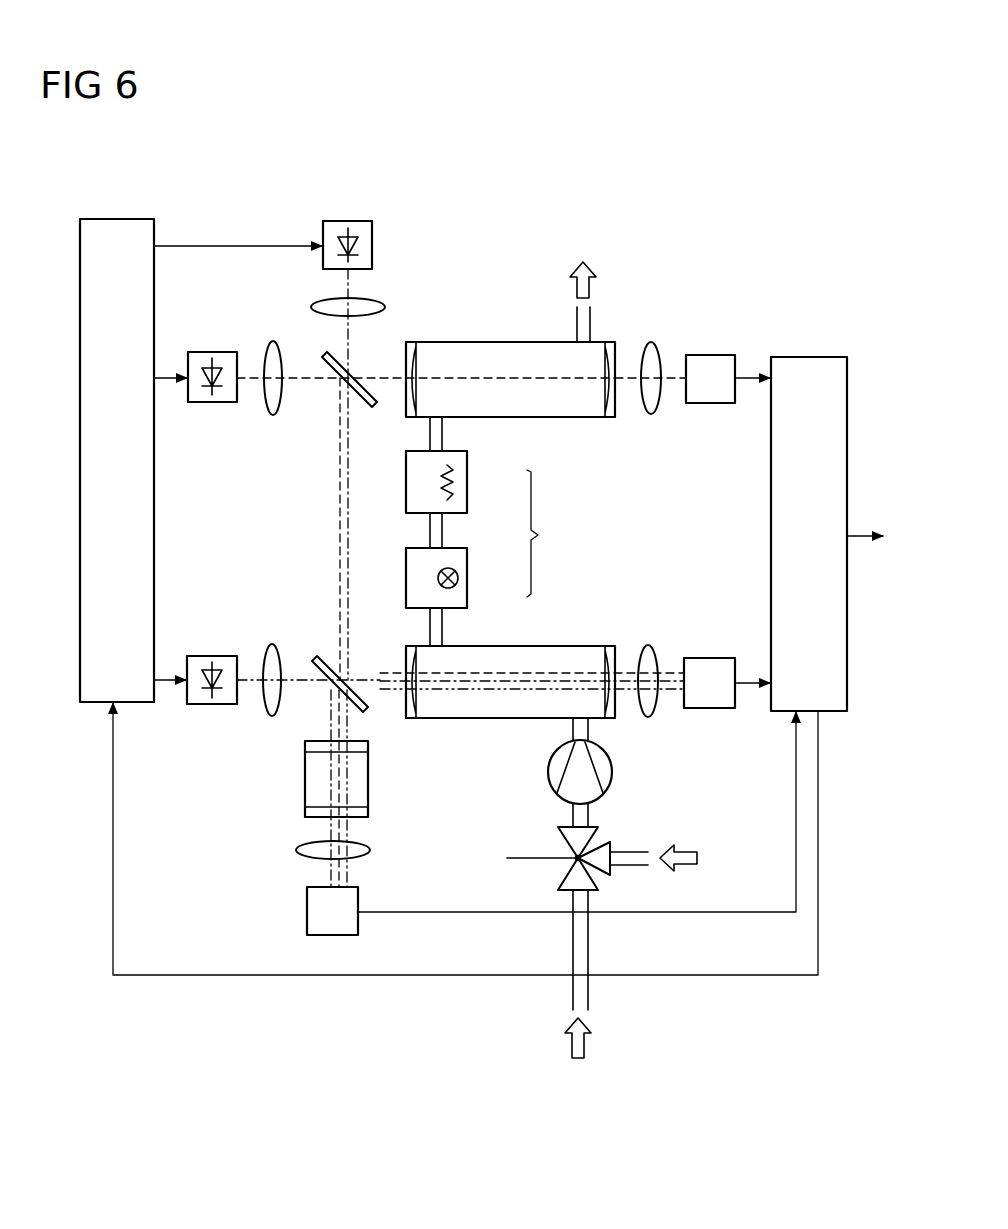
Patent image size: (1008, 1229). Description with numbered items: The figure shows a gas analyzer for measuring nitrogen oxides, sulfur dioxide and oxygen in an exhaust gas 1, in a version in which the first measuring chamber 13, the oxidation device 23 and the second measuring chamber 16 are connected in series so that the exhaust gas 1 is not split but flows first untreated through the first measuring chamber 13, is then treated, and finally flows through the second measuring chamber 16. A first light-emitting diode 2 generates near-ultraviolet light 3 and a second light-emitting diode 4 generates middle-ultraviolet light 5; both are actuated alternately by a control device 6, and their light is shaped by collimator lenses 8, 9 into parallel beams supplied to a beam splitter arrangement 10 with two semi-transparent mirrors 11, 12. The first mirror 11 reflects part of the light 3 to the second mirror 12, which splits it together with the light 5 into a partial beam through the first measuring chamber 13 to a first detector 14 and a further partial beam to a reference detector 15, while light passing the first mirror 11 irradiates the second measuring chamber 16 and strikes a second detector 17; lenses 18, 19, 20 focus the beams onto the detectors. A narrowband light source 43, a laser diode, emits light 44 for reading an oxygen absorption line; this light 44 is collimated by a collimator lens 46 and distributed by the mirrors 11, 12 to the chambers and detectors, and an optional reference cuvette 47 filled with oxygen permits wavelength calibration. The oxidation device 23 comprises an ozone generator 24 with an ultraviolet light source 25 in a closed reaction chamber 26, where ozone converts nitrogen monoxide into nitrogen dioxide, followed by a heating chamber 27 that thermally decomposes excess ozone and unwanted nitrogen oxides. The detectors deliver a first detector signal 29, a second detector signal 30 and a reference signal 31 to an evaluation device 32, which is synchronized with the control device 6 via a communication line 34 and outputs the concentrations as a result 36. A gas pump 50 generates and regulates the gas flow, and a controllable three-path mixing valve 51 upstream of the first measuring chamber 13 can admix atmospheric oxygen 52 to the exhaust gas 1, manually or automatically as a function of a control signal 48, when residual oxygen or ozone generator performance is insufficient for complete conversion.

The exhaust gas 1 is at (570, 278).
The first light-emitting diode 2 is at (214, 352).
The light 3 is at (299, 378).
The second light-emitting diode 4 is at (214, 656).
The light 5 is at (299, 680).
The control device 6 is at (121, 219).
The collimator lens 8 is at (273, 341).
The collimator lens 9 is at (273, 644).
The beam splitter arrangement 10 is at (313, 398).
The semi-transparent mirror 11 is at (370, 380).
The semi-transparent mirror 12 is at (364, 710).
The first measuring chamber 13 is at (574, 646).
The first detector 14 is at (709, 658).
The reference detector 15 is at (307, 912).
The second measuring chamber 16 is at (497, 342).
The second detector 17 is at (709, 355).
The lens 18 is at (650, 645).
The lens 19 is at (296, 850).
The lens 20 is at (651, 342).
The oxidation device 23 is at (549, 533).
The ozone generator 24 is at (400, 562).
The ultraviolet light source 25 is at (457, 585).
The reaction chamber 26 is at (467, 580).
The heating chamber 27 is at (467, 483).
The first detector signal 29 is at (750, 683).
The second detector signal 30 is at (750, 378).
The reference signal 31 is at (759, 912).
The evaluation device 32 is at (835, 357).
The communication line 34 is at (761, 977).
The result 36 is at (861, 532).
The narrowband light source 43 is at (347, 221).
The light 44 is at (352, 287).
The collimator lens 46 is at (385, 307).
The reference cuvette 47 is at (305, 780).
The control signal 48 is at (522, 857).
The gas pump 50 is at (548, 772).
The three-path mixing valve 51 is at (613, 845).
The atmospheric oxygen 52 is at (688, 845).